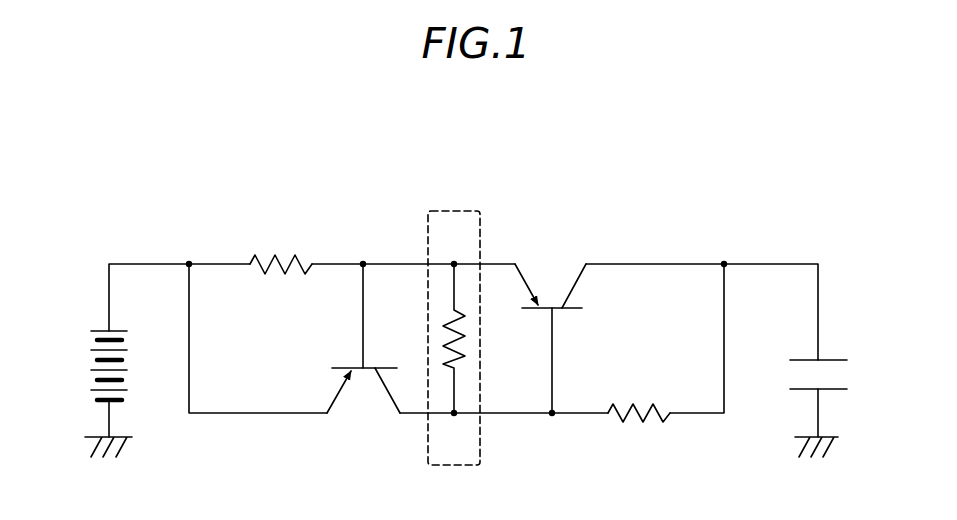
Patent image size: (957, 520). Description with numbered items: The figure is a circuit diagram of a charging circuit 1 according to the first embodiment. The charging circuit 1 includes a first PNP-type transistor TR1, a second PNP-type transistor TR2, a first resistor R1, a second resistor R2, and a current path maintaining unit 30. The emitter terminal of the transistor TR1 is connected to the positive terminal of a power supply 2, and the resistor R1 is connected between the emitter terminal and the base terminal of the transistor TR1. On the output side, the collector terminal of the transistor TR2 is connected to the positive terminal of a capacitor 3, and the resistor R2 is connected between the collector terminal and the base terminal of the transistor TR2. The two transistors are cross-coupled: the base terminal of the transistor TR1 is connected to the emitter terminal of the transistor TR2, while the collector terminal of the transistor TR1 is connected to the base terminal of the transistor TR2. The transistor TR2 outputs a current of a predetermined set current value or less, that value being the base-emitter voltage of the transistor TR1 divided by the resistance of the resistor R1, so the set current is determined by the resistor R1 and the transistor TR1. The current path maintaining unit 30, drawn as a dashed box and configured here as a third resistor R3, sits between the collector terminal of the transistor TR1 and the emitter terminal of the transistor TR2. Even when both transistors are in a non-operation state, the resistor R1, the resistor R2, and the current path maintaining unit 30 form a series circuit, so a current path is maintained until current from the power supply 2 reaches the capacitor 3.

The charging circuit 1 is at (795, 236).
The power supply 2 is at (104, 327).
The capacitor 3 is at (829, 354).
The current path maintaining unit 30 is at (451, 208).
The first resistor R1 is at (281, 279).
The second resistor R2 is at (639, 398).
The third resistor R3 is at (452, 316).
The first PNP-type transistor TR1 is at (343, 338).
The second PNP-type transistor TR2 is at (568, 338).